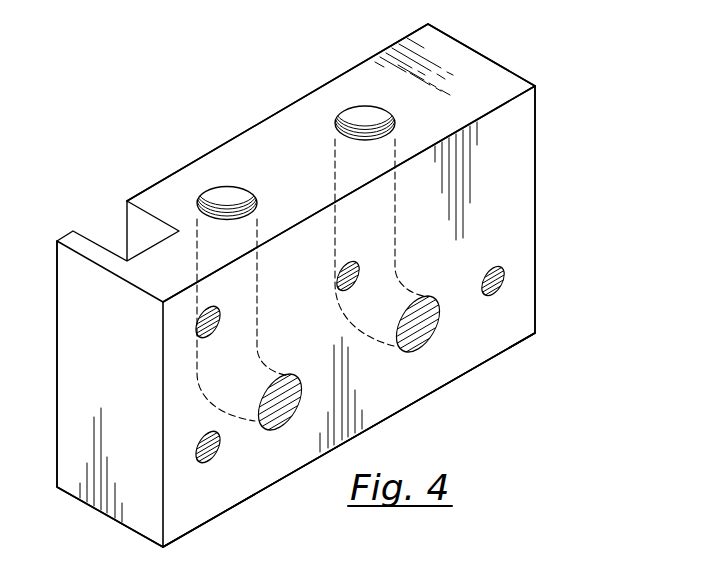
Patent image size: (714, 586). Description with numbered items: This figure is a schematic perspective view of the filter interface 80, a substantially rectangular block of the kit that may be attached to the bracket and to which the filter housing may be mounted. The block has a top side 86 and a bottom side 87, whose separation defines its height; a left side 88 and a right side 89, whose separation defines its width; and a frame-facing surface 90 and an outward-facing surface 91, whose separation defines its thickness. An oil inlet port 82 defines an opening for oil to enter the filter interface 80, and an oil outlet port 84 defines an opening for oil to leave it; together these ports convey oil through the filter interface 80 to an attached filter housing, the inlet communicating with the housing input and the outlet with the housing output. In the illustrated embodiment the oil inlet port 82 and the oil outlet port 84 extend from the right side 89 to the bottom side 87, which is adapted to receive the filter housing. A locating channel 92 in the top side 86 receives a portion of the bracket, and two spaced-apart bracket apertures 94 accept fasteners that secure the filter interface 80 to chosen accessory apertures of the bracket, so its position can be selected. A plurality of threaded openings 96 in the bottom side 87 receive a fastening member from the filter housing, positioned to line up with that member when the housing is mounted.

The filter interface 80 is at (568, 142).
The oil inlet port 82 is at (352, 117).
The oil outlet port 84 is at (207, 200).
The top side 86 is at (219, 146).
The bottom side 87 is at (190, 497).
The left side 88 is at (253, 497).
The right side 89 is at (301, 122).
The frame-facing surface 90 is at (535, 204).
The outward-facing surface 91 is at (80, 327).
The locating channel 92 is at (92, 240).
The bracket apertures 94 is at (204, 326).
The threaded openings 96 is at (350, 288).